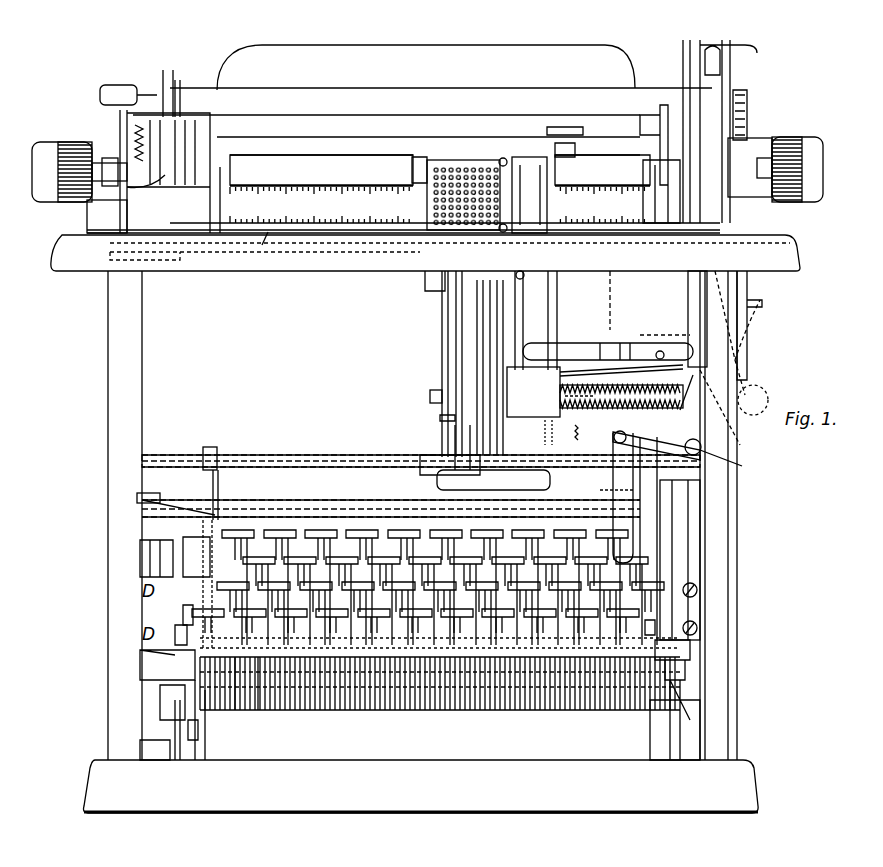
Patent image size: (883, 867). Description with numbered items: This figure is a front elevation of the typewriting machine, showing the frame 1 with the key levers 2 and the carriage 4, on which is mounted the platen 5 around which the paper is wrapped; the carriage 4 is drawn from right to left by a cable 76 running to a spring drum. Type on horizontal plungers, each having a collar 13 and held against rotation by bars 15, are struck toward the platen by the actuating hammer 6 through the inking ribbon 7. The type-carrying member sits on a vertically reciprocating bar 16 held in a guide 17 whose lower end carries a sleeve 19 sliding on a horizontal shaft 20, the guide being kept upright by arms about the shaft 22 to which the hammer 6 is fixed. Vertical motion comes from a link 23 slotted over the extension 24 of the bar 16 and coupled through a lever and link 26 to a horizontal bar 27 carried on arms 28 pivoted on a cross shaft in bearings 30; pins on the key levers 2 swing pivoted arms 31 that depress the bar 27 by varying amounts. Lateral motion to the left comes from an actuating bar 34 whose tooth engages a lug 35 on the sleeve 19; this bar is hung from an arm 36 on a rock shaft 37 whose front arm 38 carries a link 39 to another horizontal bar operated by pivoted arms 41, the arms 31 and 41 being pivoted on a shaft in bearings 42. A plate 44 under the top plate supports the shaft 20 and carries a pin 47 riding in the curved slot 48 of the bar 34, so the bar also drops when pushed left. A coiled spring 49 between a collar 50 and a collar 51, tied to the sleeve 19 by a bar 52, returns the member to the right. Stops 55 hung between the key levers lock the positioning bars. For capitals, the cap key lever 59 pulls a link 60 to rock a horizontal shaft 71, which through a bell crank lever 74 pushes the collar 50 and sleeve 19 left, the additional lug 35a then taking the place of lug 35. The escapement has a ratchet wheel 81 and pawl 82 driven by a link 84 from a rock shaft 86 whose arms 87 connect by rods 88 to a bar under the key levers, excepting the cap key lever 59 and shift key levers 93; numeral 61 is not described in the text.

The frame 1 is at (135, 367).
The key levers 2 is at (563, 530).
The carriage 4 is at (125, 208).
The platen 5 is at (403, 186).
The actuating hammer 6 is at (425, 278).
The inking ribbon 7 is at (438, 166).
The collar 13 is at (660, 497).
The strips or bars 15 is at (693, 375).
The vertically reciprocating bar 16 is at (445, 340).
The guide 17 is at (538, 342).
The sleeve 19 is at (559, 433).
The shaft 20 is at (490, 397).
The shaft 22 is at (625, 285).
The link 23 is at (423, 463).
The extension or arm 24 is at (410, 480).
The link 26 is at (427, 672).
The horizontal bar 27 is at (687, 660).
The arms 28 is at (163, 677).
The bearings 30 is at (135, 728).
The pivotally mounted arms 31 is at (468, 168).
The actuating bar 34 is at (650, 330).
The lug 35 is at (533, 392).
The additional lug 35a is at (550, 372).
The arm 36 is at (718, 385).
The rock shaft 37 is at (732, 465).
The arm 38 is at (633, 396).
The link 39 is at (620, 487).
The pivotally mounted arms 41 is at (568, 709).
The bearings 42 is at (195, 725).
The plate 44 is at (218, 487).
The pin 47 is at (605, 346).
The elongated slot 48 is at (625, 345).
The coiled spring 49 is at (572, 407).
The collar 50 is at (578, 440).
The collar 51 is at (718, 325).
The bar 52 is at (633, 380).
The stops 55 is at (258, 706).
The cap key lever 59 is at (205, 612).
The link 60 is at (174, 634).
The stud 61 is at (515, 274).
The horizontal shaft 71 is at (210, 690).
The bell crank lever 74 is at (690, 444).
The cable 76 is at (268, 235).
The ratchet wheel 81 is at (430, 400).
The escapement pawl 82 is at (440, 420).
The link 84 is at (455, 430).
The rock shaft 86 is at (335, 508).
The arms 87 is at (695, 515).
The rods 88 is at (700, 543).
The shift key levers 93 is at (645, 627).